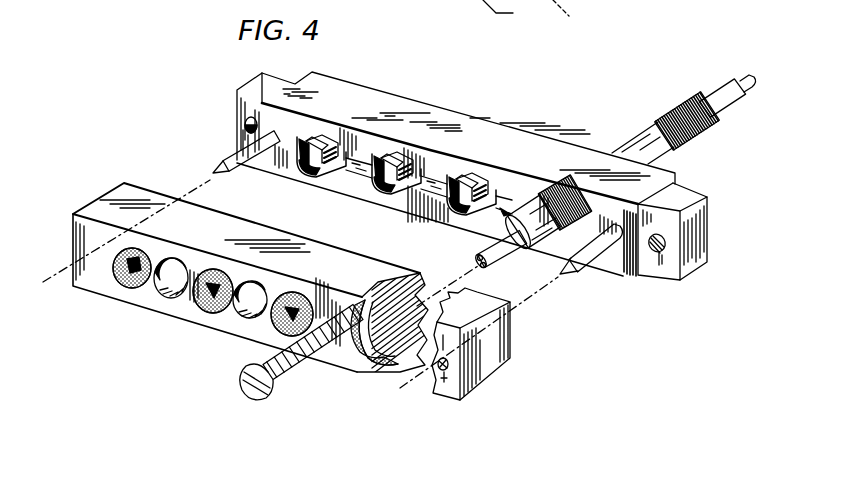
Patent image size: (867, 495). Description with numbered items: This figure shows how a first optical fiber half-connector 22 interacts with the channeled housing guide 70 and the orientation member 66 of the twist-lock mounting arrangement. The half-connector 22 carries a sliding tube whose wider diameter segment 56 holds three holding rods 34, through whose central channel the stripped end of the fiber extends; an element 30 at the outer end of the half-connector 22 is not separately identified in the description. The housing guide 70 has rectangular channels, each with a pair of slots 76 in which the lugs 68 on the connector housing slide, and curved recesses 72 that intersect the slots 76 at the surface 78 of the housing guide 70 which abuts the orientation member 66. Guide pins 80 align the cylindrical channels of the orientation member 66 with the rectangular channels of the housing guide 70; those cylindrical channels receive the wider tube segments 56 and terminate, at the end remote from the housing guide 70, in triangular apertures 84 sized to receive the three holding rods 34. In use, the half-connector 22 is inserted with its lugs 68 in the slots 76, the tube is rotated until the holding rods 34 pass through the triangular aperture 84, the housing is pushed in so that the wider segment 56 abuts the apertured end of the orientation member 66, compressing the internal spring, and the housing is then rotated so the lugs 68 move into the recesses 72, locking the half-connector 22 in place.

The first optical fiber half-connector 22 is at (634, 146).
The connector 30 is at (752, 72).
The holding rods 34 is at (479, 252).
The wider diameter tube segment 56 is at (538, 246).
The orientation member 66 is at (194, 307).
The lugs 68 is at (598, 207).
The channeled housing guide 70 is at (542, 136).
The curved recesses 72 is at (316, 179).
The slots 76 is at (504, 182).
The surface of housing guide 78 is at (388, 199).
The guide pins 80 is at (226, 161).
The triangular apertures 84 is at (131, 272).